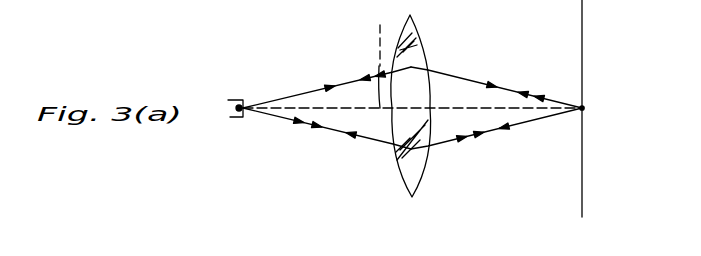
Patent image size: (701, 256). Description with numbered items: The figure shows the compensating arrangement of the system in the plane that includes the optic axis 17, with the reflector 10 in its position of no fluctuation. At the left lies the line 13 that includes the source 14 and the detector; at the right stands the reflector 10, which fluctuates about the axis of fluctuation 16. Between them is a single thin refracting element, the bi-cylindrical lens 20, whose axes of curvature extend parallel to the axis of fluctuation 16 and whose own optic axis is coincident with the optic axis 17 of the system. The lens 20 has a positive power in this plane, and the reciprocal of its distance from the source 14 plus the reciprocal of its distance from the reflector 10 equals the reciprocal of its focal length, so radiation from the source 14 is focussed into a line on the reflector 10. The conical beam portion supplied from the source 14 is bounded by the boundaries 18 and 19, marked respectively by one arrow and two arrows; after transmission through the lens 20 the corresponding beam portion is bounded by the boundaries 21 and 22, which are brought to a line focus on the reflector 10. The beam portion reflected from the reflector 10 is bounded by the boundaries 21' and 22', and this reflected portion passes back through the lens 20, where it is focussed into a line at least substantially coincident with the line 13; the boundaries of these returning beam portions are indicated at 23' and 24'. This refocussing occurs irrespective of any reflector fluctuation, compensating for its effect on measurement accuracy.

The reflector 10 is at (582, 25).
The line including the source and the detector 13 is at (235, 118).
The source 14 is at (240, 99).
The axis of fluctuation of the reflector 16 is at (585, 107).
The optic axis 17 is at (384, 55).
The beam boundary 18 is at (318, 88).
The beam boundary 19 is at (288, 121).
The bi-cylindrical lens 20 is at (418, 176).
The beam boundary 21 is at (496, 65).
The beam boundary 21' is at (526, 154).
The beam boundary 22 is at (496, 149).
The beam boundary 22' is at (542, 68).
The beam boundary 23' is at (353, 161).
The beam boundary 24' is at (359, 40).